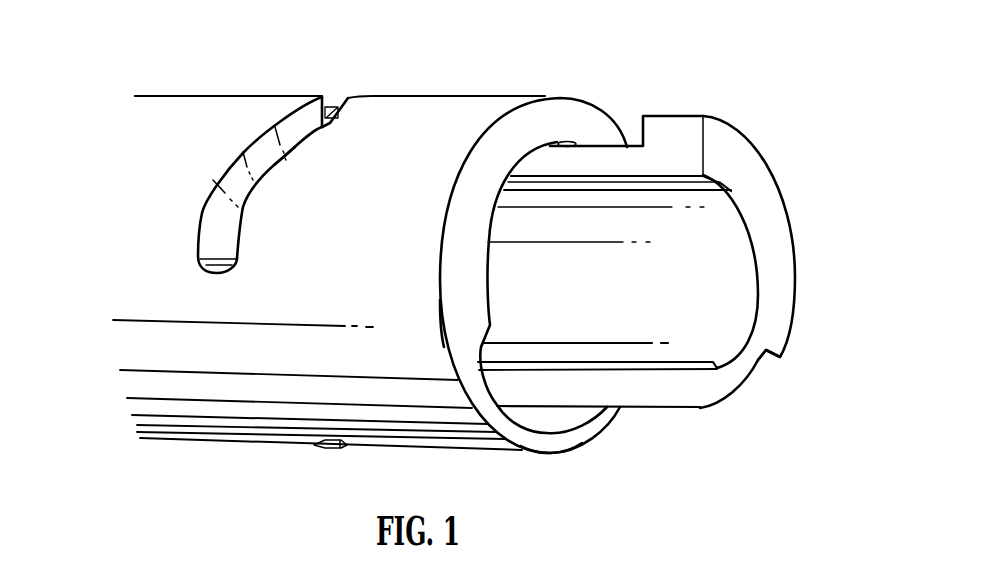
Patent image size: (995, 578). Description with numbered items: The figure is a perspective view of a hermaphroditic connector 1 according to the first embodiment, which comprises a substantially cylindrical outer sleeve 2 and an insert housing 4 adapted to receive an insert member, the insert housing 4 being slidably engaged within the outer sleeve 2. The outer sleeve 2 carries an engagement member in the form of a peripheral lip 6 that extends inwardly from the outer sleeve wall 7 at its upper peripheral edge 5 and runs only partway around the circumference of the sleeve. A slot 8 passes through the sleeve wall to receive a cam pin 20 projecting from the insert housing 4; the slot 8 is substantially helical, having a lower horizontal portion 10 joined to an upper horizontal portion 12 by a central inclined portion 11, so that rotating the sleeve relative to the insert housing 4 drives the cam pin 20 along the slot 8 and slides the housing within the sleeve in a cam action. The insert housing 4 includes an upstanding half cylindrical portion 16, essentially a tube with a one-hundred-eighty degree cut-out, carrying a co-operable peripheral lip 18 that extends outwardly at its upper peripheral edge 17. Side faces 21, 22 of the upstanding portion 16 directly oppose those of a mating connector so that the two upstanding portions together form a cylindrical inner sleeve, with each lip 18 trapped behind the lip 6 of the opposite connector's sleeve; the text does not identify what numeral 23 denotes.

The hermaphroditic connector 1 is at (227, 73).
The outer sleeve 2 is at (470, 94).
The insert housing 4 is at (802, 233).
The upper peripheral edge 5 is at (443, 333).
The peripheral lip 6 is at (478, 344).
The outer sleeve wall 7 is at (525, 97).
The slot 8 is at (295, 133).
The lower horizontal portion 10 is at (198, 254).
The central inclined portion 11 is at (283, 167).
The upper horizontal portion 12 is at (322, 96).
The upstanding half cylindrical portion 16 is at (706, 340).
The upper peripheral edge 17 is at (747, 357).
The peripheral lip 18 is at (689, 124).
The cam pin 20 is at (343, 97).
The side face 21 is at (627, 148).
The side face 22 is at (640, 393).
The ring bottom 23 is at (541, 444).